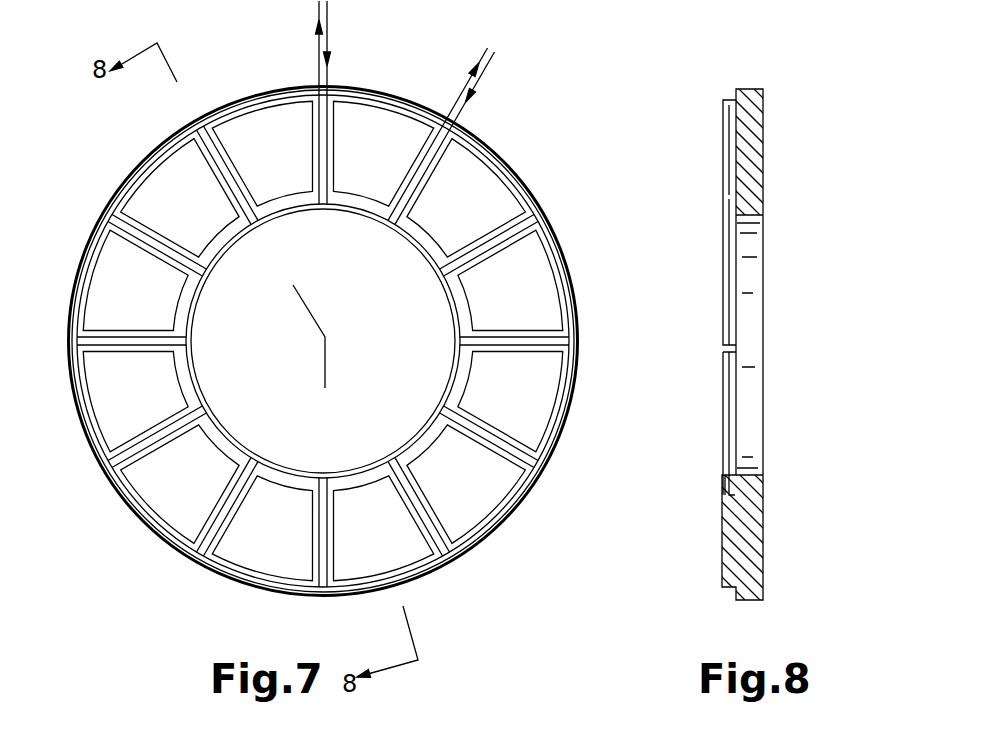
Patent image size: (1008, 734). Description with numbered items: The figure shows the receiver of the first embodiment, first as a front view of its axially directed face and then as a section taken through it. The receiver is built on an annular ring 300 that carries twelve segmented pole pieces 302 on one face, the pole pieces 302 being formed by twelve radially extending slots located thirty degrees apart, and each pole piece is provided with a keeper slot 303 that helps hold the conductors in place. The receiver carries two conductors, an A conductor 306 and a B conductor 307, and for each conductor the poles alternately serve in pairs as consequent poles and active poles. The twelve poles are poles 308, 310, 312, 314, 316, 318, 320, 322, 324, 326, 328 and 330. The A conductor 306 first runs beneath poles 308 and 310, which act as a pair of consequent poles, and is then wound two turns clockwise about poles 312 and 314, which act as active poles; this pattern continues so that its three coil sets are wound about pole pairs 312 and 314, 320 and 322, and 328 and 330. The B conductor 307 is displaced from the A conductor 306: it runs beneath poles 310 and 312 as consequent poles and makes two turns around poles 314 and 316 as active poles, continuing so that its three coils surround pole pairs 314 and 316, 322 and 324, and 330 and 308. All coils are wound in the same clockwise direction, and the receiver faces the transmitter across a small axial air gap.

In FIG. 8, the annular ring 300 is at (755, 128).
In FIG. 7, the segmented pole pieces 302 is at (102, 260).
In FIG. 8, the segmented pole pieces 302 is at (727, 122).
In FIG. 8, the keeper slot 303 is at (727, 197).
In FIG. 7, the A conductor 306 is at (332, 38).
In FIG. 7, the B conductor 307 is at (487, 80).
In FIG. 7, the pole 308 is at (372, 135).
In FIG. 7, the pole 310 is at (465, 193).
In FIG. 7, the pole 312 is at (515, 296).
In FIG. 7, the pole 314 is at (515, 398).
In FIG. 7, the pole 316 is at (470, 498).
In FIG. 7, the pole 318 is at (392, 548).
In FIG. 7, the pole 320 is at (275, 545).
In FIG. 7, the pole 322 is at (172, 490).
In FIG. 7, the pole 324 is at (122, 402).
In FIG. 7, the pole 326 is at (100, 303).
In FIG. 7, the pole 328 is at (172, 183).
In FIG. 7, the pole 330 is at (267, 133).